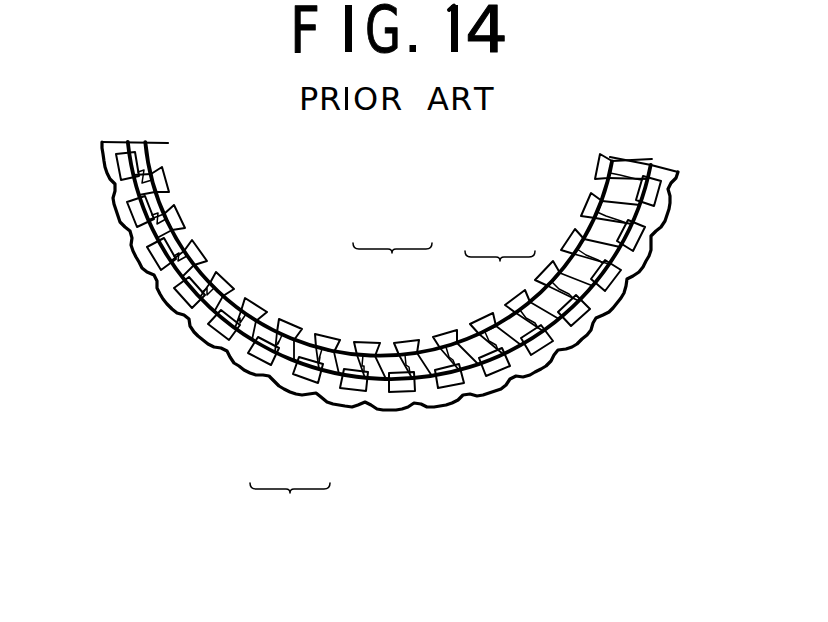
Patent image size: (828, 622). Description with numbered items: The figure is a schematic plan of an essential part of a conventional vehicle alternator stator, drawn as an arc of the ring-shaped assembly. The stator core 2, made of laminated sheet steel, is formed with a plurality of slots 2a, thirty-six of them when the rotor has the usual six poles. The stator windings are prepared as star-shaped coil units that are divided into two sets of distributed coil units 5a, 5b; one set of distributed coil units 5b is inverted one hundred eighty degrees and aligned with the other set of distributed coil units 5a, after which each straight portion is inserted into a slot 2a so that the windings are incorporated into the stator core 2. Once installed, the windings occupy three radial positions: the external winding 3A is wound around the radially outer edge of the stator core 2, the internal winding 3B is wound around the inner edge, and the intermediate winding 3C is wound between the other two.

The stator core 2 is at (662, 258).
The slots 2a is at (623, 298).
The distributed coil units 5a is at (440, 337).
The distributed coil units 5b is at (317, 337).
The external winding 3A is at (290, 504).
The internal winding 3B is at (392, 228).
The intermediate winding 3C is at (500, 236).